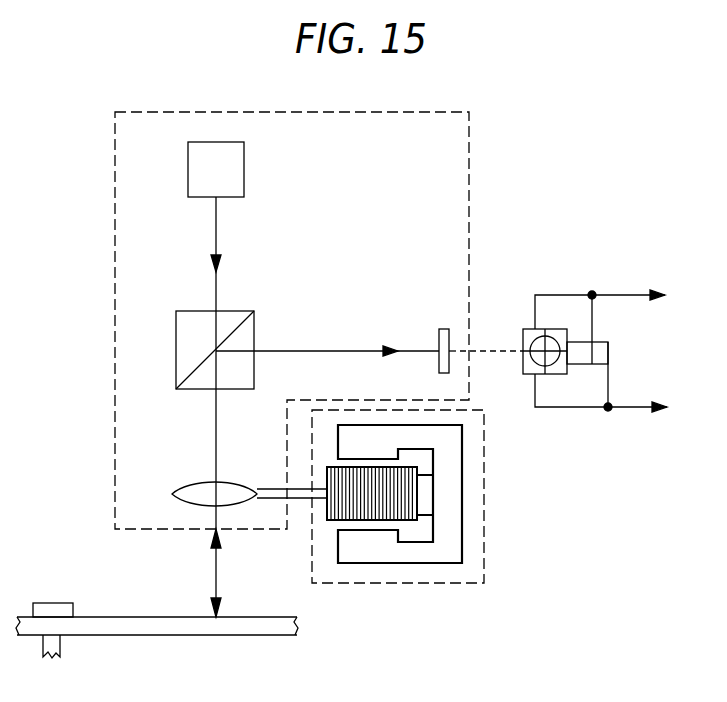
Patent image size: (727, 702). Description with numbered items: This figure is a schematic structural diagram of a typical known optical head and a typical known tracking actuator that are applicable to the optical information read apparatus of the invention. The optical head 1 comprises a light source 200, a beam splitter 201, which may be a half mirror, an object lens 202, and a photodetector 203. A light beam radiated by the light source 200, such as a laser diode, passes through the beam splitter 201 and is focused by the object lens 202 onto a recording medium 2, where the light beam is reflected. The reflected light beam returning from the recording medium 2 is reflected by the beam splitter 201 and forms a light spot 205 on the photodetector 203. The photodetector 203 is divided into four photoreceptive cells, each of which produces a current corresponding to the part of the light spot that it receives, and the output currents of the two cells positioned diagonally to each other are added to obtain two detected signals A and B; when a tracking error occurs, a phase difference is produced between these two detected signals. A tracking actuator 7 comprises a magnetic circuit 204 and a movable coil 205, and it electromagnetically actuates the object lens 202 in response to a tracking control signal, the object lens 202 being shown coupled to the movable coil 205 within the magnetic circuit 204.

The optical head 1 is at (470, 132).
The recording medium 2 is at (162, 627).
The tracking actuator 7 is at (484, 555).
The light source 200 is at (244, 177).
The beam splitter 201 is at (240, 310).
The object lens 202 is at (204, 482).
The photodetector 203 is at (438, 332).
The magnetic circuit 204 is at (450, 493).
The movable coil 205 is at (408, 521).